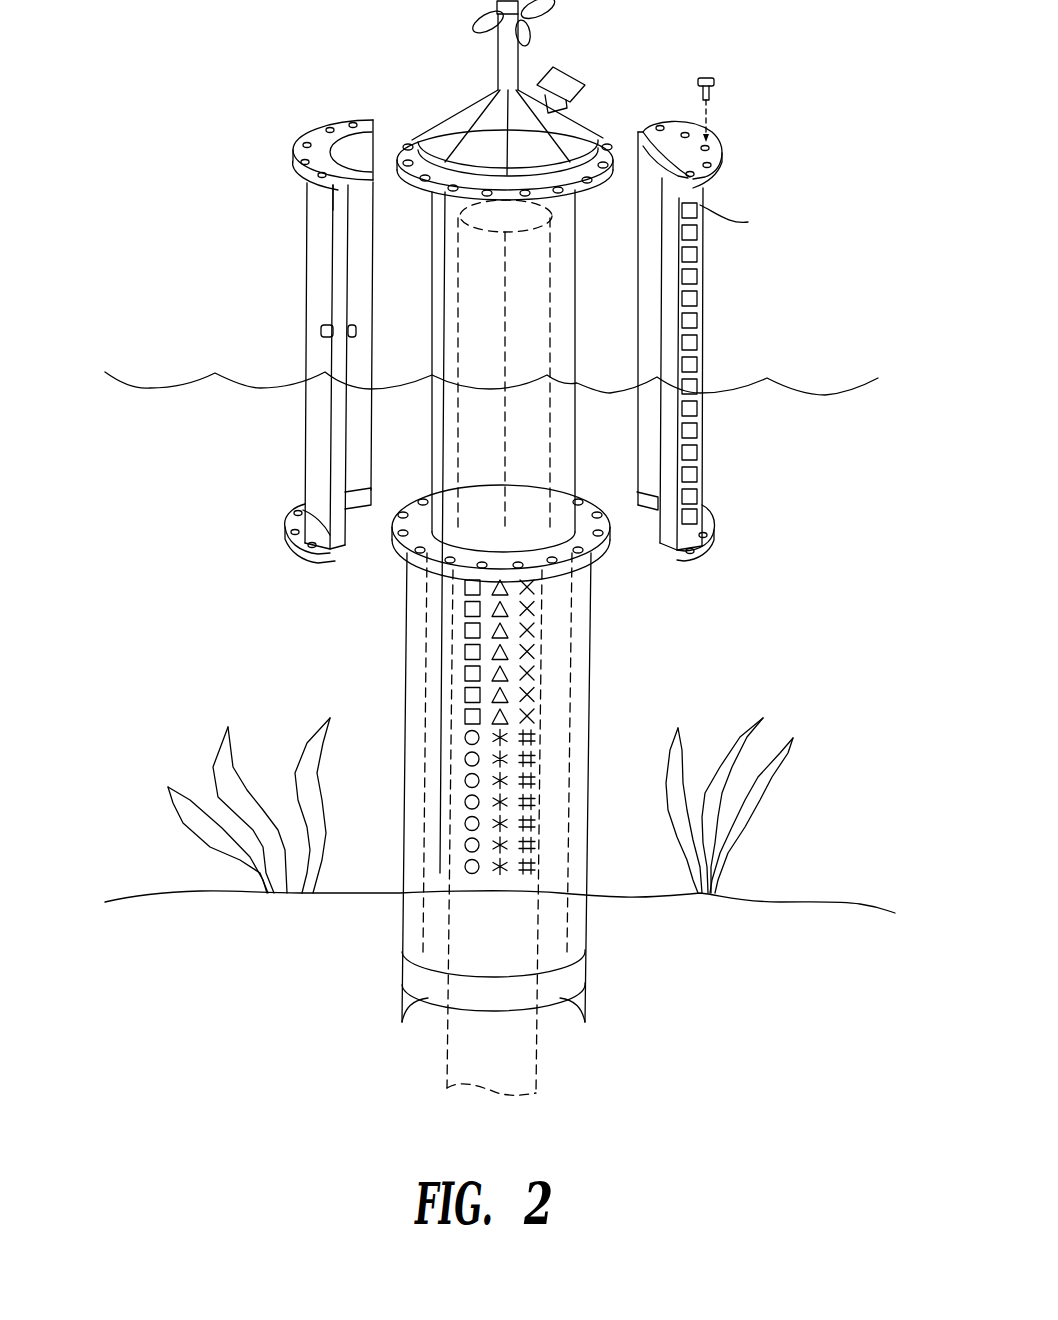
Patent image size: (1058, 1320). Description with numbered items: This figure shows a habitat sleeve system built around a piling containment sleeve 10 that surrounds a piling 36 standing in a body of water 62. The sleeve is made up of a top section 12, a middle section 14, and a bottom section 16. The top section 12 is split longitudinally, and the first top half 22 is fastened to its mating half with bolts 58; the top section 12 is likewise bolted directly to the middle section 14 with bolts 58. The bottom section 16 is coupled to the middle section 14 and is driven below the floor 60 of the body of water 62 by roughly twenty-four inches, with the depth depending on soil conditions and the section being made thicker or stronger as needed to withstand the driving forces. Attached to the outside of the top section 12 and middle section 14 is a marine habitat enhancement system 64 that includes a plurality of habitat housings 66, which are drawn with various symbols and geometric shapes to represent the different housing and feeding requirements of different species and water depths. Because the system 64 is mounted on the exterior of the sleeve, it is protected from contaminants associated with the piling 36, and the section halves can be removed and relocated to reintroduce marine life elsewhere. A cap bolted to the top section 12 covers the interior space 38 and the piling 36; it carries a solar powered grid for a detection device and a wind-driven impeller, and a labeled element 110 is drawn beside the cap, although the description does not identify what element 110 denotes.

The sleeve 10 is at (297, 130).
The top section 12 is at (298, 212).
The first top half 22 is at (320, 198).
The bolts 58 is at (318, 331).
The body of water 62 is at (198, 378).
The transceiver 110 is at (558, 72).
The interior space 38 is at (558, 215).
The piling 36 is at (540, 258).
The middle section 14 is at (602, 583).
The bottom section 16 is at (586, 1003).
The habitat housings 66 is at (500, 652).
The marine habitat enhancement system 64 is at (716, 504).
The floor 60 is at (140, 893).